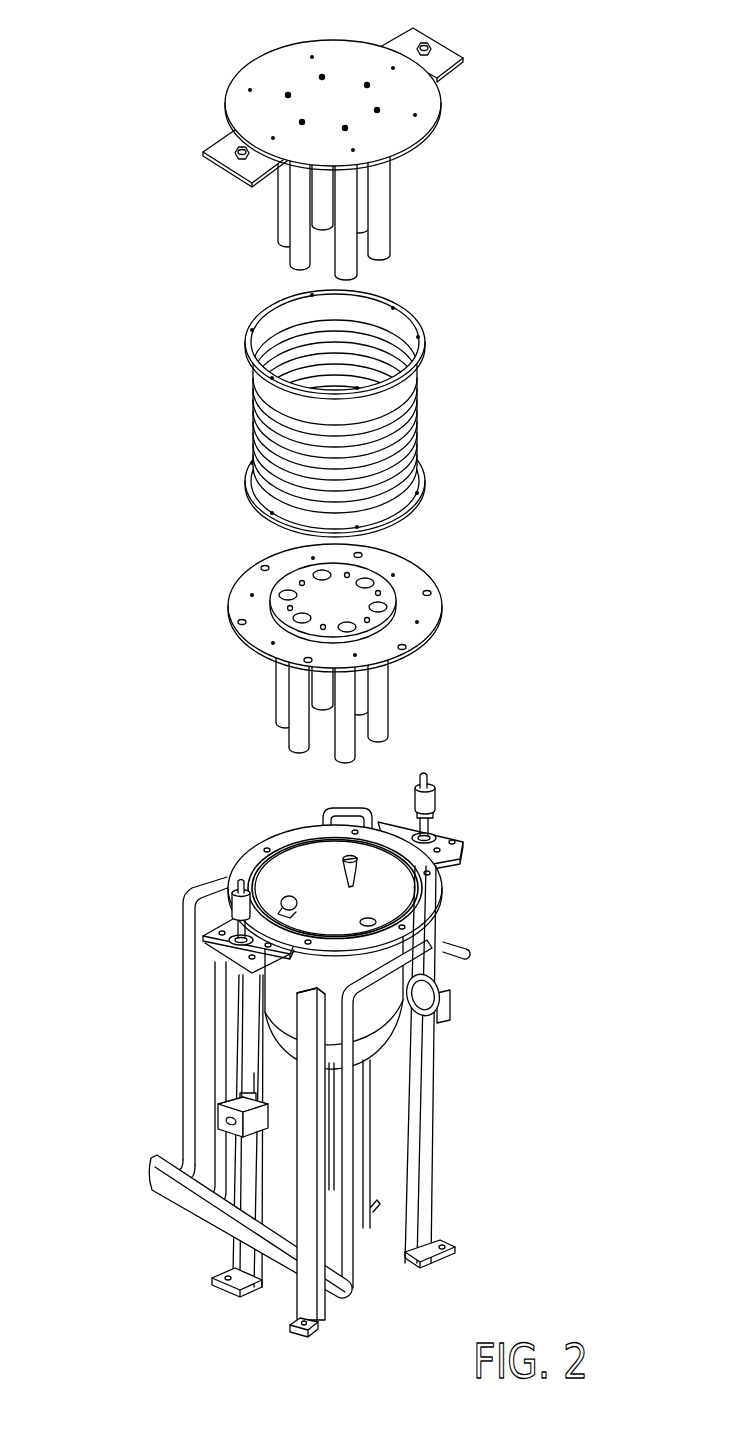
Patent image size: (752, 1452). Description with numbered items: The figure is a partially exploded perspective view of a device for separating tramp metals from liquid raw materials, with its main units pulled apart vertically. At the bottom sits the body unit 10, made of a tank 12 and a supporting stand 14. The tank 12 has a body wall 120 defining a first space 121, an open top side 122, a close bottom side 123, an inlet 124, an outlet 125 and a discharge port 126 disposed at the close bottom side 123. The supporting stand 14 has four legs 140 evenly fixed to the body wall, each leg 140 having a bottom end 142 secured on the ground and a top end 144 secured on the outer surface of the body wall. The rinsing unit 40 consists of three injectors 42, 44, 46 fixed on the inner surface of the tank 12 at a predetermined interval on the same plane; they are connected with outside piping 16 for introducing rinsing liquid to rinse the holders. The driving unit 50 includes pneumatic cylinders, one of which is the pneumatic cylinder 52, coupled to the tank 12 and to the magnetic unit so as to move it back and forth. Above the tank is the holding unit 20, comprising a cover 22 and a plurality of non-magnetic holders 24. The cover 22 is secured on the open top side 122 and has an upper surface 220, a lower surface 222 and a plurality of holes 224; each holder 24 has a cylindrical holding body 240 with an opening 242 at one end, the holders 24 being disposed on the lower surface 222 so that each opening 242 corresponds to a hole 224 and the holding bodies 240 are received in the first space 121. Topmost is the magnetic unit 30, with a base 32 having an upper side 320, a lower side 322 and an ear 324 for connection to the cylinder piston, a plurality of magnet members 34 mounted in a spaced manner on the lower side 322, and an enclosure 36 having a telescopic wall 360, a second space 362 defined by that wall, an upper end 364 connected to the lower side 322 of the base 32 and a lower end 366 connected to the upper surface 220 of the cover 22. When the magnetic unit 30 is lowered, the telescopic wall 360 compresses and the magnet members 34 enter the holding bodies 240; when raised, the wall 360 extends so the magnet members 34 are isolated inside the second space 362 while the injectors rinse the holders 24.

The body unit 10 is at (588, 902).
The tank 12 is at (345, 1032).
The supporting stand 14 is at (345, 1117).
The outside piping 16 is at (365, 1278).
The holding unit 20 is at (105, 577).
The cover 22 is at (332, 574).
The non-magnetic holders 24 is at (314, 706).
The magnetic unit 30 is at (86, 61).
The base 32 is at (314, 101).
The magnet members 34 is at (266, 221).
The enclosure 36 is at (307, 413).
The rinsing unit 40 is at (533, 780).
The injector 42 is at (365, 872).
The injector 44 is at (302, 907).
The injector 46 is at (368, 921).
The driving unit 50 is at (88, 779).
The pneumatic cylinder 52 is at (398, 792).
The body wall 120 is at (287, 987).
The first space 121 is at (313, 870).
The open top side 122 is at (278, 842).
The close bottom side 123 is at (280, 1047).
The inlet 124 is at (282, 900).
The outlet 125 is at (427, 992).
The discharge port 126 is at (330, 1063).
The legs 140 is at (425, 1143).
The bottom end 142 is at (315, 1330).
The top end 144 is at (313, 1010).
The upper surface 220 is at (407, 577).
The lower surface 222 is at (433, 637).
The holes 224 is at (413, 559).
The holding body 240 is at (380, 697).
The opening 242 is at (380, 608).
The upper side 320 is at (285, 72).
The lower side 322 is at (420, 143).
The ear 324 is at (450, 57).
The telescopic wall 360 is at (420, 423).
The second space 362 is at (350, 348).
The upper end 364 is at (338, 361).
The lower end 366 is at (422, 477).